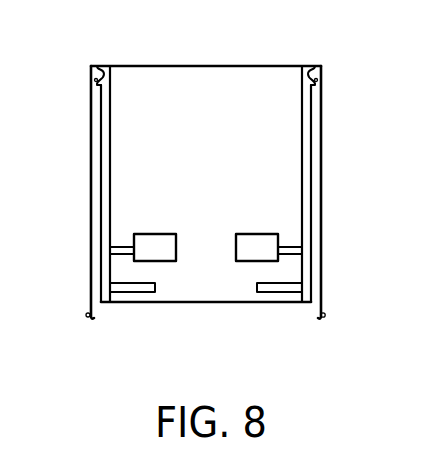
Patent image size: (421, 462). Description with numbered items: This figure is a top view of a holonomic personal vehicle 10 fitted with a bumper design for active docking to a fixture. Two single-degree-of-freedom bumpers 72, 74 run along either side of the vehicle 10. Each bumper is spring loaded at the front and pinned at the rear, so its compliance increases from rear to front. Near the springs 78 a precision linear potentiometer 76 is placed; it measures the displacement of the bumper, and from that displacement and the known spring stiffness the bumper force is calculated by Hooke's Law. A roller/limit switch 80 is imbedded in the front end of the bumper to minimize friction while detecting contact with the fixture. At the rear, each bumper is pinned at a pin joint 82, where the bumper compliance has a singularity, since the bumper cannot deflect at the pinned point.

The vehicle 10 is at (260, 65).
The bumper 72 is at (90, 172).
The bumper 74 is at (322, 128).
The precision linear potentiometer 76 is at (252, 233).
The springs 78 is at (147, 295).
The roller/limit switch 80 is at (326, 316).
The pin joint 82 is at (318, 80).